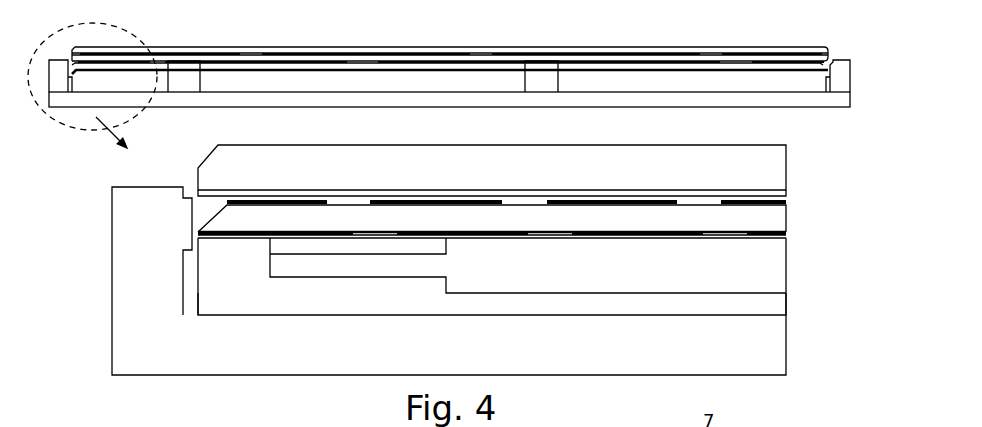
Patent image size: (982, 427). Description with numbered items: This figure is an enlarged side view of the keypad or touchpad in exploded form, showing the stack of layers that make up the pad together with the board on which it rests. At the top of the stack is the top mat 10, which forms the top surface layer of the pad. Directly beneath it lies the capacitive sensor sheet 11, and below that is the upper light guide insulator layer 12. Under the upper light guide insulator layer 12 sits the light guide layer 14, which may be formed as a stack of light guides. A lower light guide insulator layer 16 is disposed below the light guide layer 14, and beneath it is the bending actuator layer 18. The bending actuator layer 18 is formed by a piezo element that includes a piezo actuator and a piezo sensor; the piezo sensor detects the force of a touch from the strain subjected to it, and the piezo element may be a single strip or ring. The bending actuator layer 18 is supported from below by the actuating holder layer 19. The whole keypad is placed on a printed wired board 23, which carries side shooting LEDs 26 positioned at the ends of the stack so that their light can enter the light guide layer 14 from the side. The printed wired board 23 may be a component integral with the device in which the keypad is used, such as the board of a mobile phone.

The top mat 10 is at (355, 50).
The capacitive sensor sheet 11 is at (781, 193).
The upper light guide insulator layer 12 is at (781, 203).
The light guide layer 14 is at (683, 68).
The lower light guide insulator layer 16 is at (781, 234).
The bending actuator layer 18 is at (781, 271).
The actuating holder layer 19 is at (781, 305).
The printed wired board 23 is at (781, 351).
The side shooting LEDs 26 is at (543, 70).